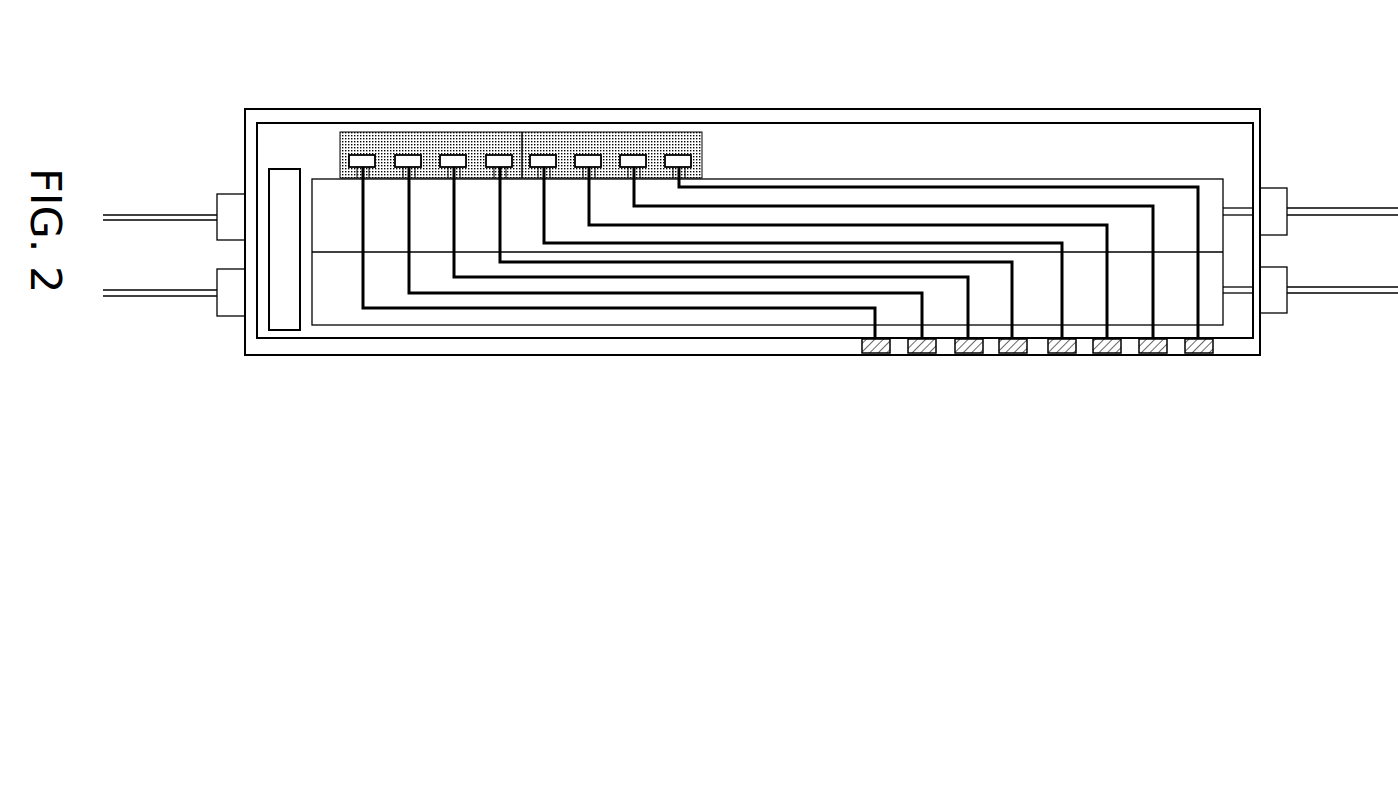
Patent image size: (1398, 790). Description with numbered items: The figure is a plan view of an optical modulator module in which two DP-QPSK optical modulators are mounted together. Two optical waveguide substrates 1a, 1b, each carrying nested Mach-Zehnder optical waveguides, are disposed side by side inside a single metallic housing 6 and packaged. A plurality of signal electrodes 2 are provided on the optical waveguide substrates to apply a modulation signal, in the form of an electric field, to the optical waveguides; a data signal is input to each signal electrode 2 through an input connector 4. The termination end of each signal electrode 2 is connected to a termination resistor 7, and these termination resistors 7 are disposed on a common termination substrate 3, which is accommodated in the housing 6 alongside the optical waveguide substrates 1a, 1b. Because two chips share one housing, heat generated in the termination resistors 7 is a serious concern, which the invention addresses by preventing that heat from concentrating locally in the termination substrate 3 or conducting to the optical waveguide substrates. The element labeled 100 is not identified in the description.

The optical element 100 is at (285, 180).
The signal electrode 2 is at (1083, 187).
The termination substrate 3 is at (467, 145).
The termination resistor 7 is at (672, 145).
The optical waveguide substrate 1a is at (1205, 175).
The optical waveguide substrate 1b is at (1213, 312).
The input connector 4 is at (1202, 353).
The housing 6 is at (513, 347).